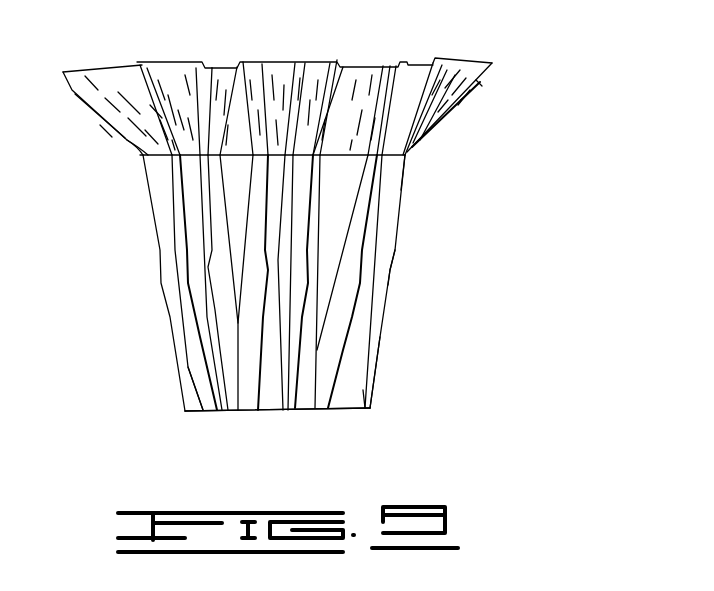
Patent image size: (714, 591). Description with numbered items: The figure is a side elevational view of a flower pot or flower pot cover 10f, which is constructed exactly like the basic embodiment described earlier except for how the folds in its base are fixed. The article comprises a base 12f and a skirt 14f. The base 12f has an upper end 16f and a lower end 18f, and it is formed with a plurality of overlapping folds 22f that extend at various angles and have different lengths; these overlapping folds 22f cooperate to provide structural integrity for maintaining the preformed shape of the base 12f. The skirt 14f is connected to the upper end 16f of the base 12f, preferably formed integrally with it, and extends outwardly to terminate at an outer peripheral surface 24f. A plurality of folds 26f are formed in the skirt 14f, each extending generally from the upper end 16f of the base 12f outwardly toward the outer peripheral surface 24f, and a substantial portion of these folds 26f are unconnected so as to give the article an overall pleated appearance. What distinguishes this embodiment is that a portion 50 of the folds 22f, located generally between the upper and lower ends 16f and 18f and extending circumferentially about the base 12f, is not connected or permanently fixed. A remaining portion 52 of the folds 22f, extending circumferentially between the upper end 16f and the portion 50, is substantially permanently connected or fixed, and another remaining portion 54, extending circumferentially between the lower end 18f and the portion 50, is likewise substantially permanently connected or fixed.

The flower pot or flower pot cover 10f is at (412, 224).
The base 12f is at (380, 341).
The skirt 14f is at (467, 100).
The upper end 16f is at (127, 140).
The lower end 18f is at (338, 412).
The overlapping folds 22f is at (203, 367).
The outer peripheral surface 24f is at (490, 62).
The folds 26f is at (193, 88).
The portion 50 is at (395, 278).
The remaining portion 52 is at (402, 183).
The remaining portion 54 is at (372, 384).